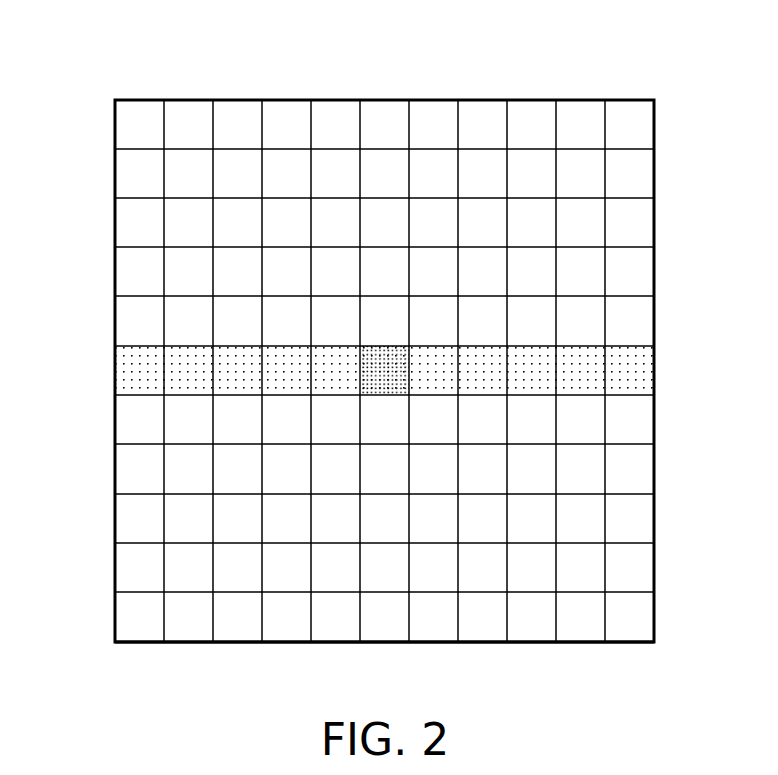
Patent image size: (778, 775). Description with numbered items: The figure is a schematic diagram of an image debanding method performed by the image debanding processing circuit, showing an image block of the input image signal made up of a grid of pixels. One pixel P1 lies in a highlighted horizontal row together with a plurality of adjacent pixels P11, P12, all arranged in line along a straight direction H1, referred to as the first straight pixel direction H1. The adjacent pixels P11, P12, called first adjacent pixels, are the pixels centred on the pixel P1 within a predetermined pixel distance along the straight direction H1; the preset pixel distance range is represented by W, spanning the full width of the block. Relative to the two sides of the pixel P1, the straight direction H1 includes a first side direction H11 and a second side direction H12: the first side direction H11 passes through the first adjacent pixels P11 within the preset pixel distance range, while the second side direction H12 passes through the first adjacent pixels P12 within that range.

The first adjacent pixel P11 is at (136, 360).
The first adjacent pixel P12 is at (437, 360).
The pixel P1 is at (385, 360).
The first straight pixel direction H1 is at (82, 360).
The first side direction H11 is at (385, 371).
The second side direction H12 is at (385, 371).
The preset pixel distance range W is at (654, 645).